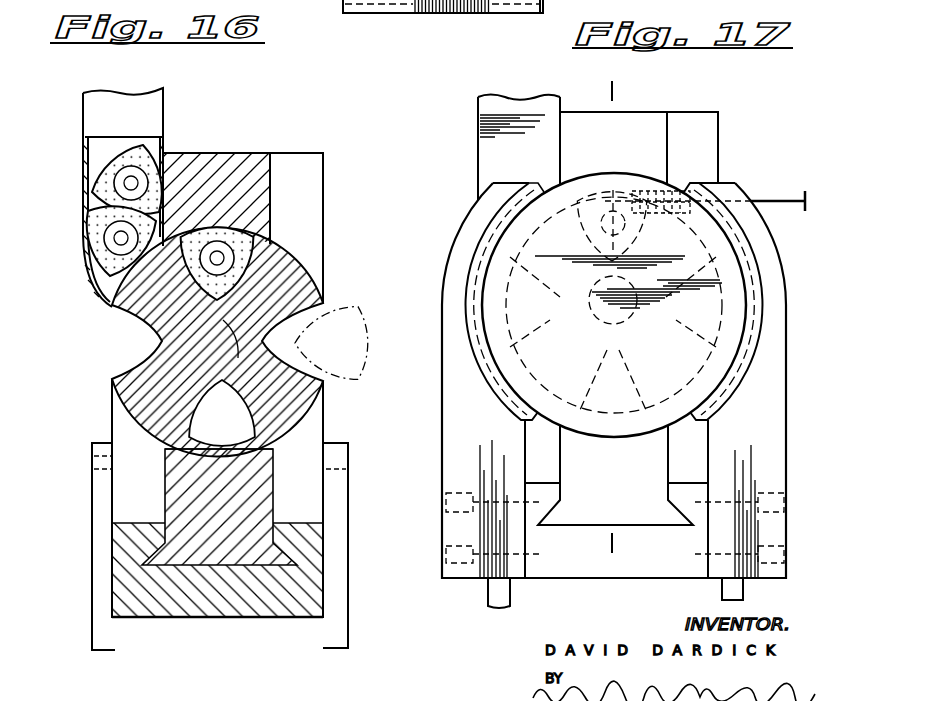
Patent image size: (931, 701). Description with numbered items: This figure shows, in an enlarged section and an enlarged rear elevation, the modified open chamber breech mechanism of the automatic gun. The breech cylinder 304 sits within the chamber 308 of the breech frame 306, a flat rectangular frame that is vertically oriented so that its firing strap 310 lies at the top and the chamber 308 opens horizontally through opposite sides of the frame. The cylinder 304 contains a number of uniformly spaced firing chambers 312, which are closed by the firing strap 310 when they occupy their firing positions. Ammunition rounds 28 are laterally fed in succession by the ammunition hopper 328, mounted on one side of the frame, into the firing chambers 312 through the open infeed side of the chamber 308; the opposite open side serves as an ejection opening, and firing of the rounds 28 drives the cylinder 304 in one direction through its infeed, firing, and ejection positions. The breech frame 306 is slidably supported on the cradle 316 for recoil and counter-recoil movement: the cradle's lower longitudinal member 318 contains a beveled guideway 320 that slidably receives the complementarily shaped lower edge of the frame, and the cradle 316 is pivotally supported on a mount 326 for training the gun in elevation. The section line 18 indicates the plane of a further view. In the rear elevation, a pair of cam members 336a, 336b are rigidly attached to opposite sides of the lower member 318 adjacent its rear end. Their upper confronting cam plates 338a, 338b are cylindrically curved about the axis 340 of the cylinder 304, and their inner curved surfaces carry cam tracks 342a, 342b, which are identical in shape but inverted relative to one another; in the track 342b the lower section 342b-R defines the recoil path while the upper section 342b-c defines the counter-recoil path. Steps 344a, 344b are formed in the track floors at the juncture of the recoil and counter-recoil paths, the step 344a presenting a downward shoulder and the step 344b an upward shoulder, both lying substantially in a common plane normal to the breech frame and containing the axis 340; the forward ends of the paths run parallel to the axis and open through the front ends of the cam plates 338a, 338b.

In FIG. 16, the ammunition rounds 28 is at (205, 277).
In FIG. 16, the breech cylinder 304 is at (322, 398).
In FIG. 16, the breech frame 306 is at (268, 137).
In FIG. 16, the chamber 308 is at (233, 449).
In FIG. 16, the firing strap 310 is at (265, 182).
In FIG. 16, the firing chambers 312 is at (130, 347).
In FIG. 16, the cradle 316 is at (233, 620).
In FIG. 16, the lower longitudinal member 318 is at (173, 602).
In FIG. 16, the beveled guideway 320 is at (262, 528).
In FIG. 16, the mount 326 is at (343, 554).
In FIG. 16, the ammunition hopper 328 is at (105, 111).
In FIG. 17, the section line 18- 18 is at (611, 543).
In FIG. 17, the cam member 336a is at (722, 448).
In FIG. 17, the cam member 336b is at (487, 411).
In FIG. 17, the cam plate 338a is at (745, 250).
In FIG. 17, the cam plate 338b is at (485, 229).
In FIG. 17, the axis of the breech cylinder 340 is at (613, 306).
In FIG. 17, the cam track 342a is at (752, 314).
In FIG. 17, the cam track 342b is at (462, 314).
In FIG. 17, the upper section of cam track 342b 342b-c is at (488, 213).
In FIG. 17, the lower section of cam track 342b 342b-R is at (480, 360).
In FIG. 17, the step 344a is at (757, 302).
In FIG. 17, the step 344b is at (452, 282).